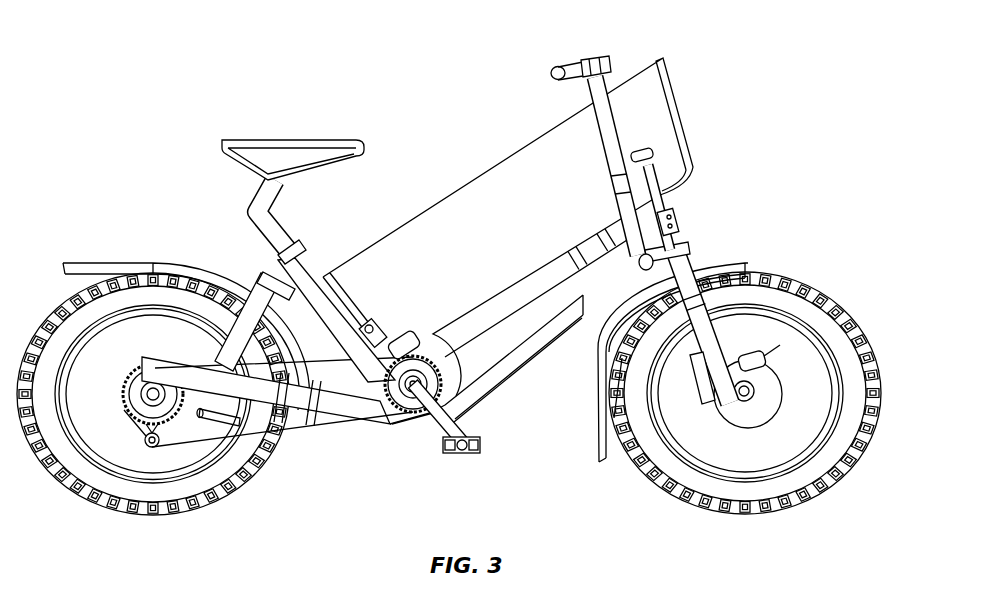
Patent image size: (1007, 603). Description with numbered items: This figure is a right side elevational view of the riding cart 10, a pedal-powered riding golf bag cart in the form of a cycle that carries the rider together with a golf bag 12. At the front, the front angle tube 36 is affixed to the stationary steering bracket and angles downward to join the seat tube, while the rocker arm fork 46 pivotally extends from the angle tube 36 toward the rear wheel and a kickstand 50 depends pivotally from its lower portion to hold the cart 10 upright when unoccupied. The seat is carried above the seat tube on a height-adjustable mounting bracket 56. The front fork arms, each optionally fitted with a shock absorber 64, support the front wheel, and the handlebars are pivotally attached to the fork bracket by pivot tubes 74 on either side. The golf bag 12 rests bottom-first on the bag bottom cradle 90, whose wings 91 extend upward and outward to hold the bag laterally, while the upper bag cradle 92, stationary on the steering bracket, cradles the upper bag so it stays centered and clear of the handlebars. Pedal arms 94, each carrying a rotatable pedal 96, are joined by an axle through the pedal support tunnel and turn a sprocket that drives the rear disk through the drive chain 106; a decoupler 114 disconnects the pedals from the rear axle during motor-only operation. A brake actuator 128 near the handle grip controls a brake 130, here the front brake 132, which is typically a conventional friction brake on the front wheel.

The riding cart 10 is at (496, 58).
The golf bag 12 is at (522, 240).
The front angle tube 36 is at (317, 293).
The rocker arm fork 46 is at (752, 312).
The kickstand 50 is at (212, 436).
The mounting bracket 56 is at (278, 258).
The shock absorber 64 is at (606, 418).
The pivot tube 74 is at (604, 124).
The bag bottom cradle 90 is at (382, 323).
The wings 91 is at (406, 335).
The upper bag cradle 92 is at (661, 157).
The pedal arms 94 is at (455, 416).
The pedal 96 is at (473, 454).
The drive chain 106 is at (340, 424).
The decoupler 114 is at (153, 447).
The brake actuator 128 is at (612, 60).
The brake 130 is at (770, 362).
The front brake 132 is at (774, 374).